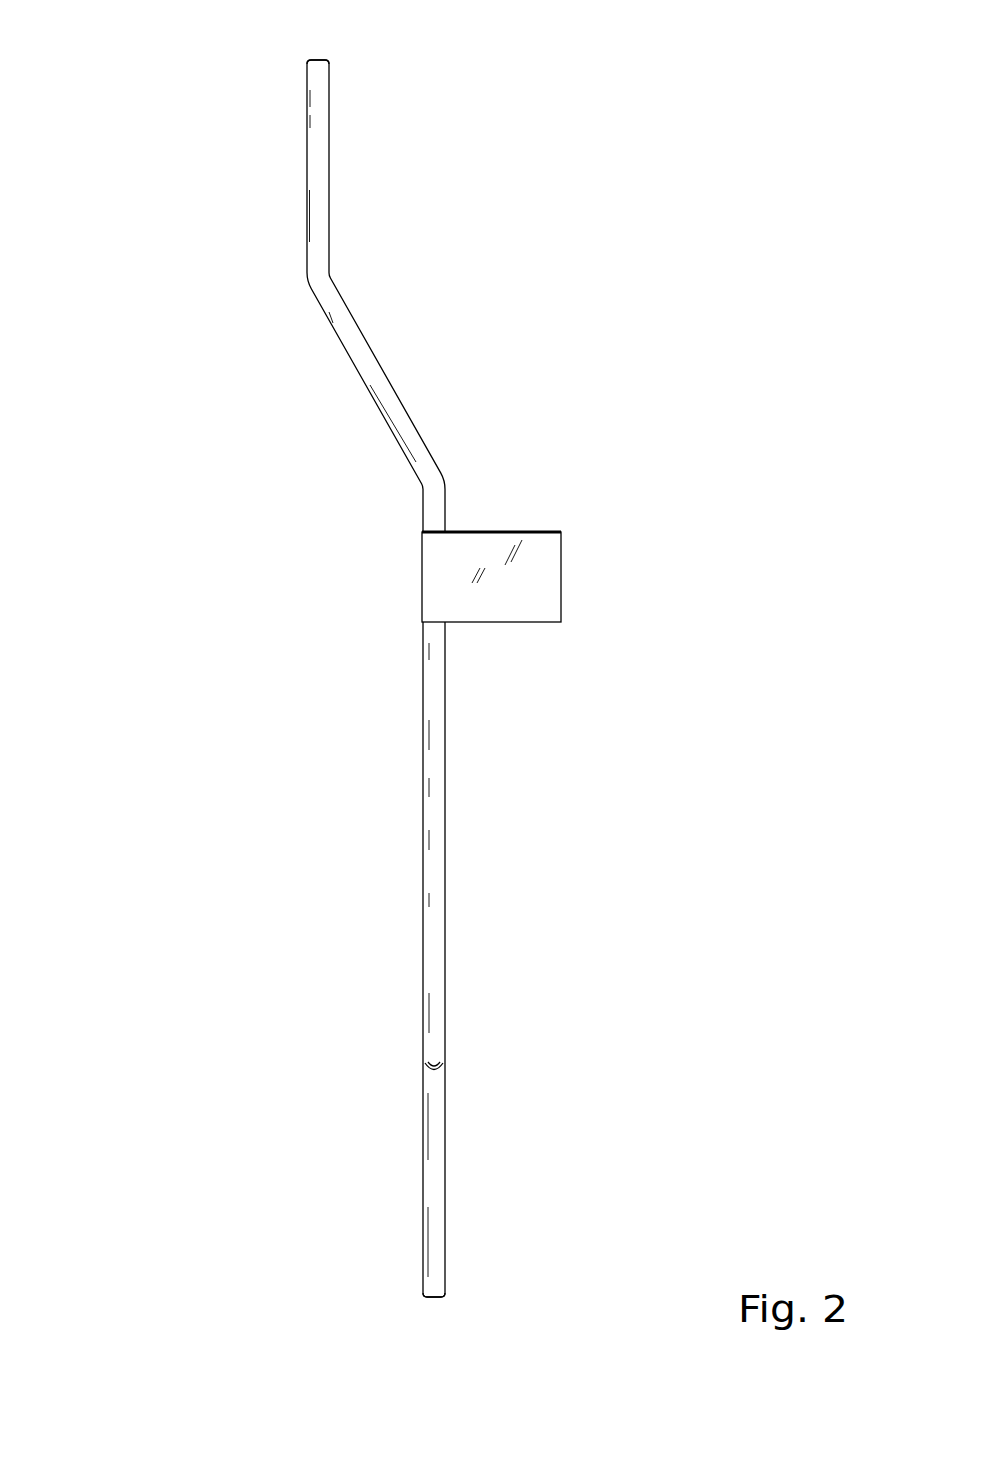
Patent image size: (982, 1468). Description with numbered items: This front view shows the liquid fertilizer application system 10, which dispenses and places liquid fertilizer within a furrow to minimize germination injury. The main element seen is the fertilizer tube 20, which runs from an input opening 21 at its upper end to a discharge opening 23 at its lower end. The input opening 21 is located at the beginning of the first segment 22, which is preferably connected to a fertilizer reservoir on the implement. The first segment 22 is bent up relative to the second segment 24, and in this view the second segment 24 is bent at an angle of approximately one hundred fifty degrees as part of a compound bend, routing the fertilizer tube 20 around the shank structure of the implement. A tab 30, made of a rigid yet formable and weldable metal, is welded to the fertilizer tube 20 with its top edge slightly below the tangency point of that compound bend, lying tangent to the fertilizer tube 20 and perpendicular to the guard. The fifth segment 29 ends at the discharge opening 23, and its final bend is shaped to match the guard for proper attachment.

The liquid fertilizer application system 10 is at (622, 255).
The fertilizer tube 20 is at (448, 844).
The input opening 21 is at (317, 60).
The first segment 22 is at (312, 172).
The discharge opening 23 is at (430, 1298).
The second segment 24 is at (392, 395).
The fifth segment 29 is at (433, 1187).
The tab 30 is at (552, 580).